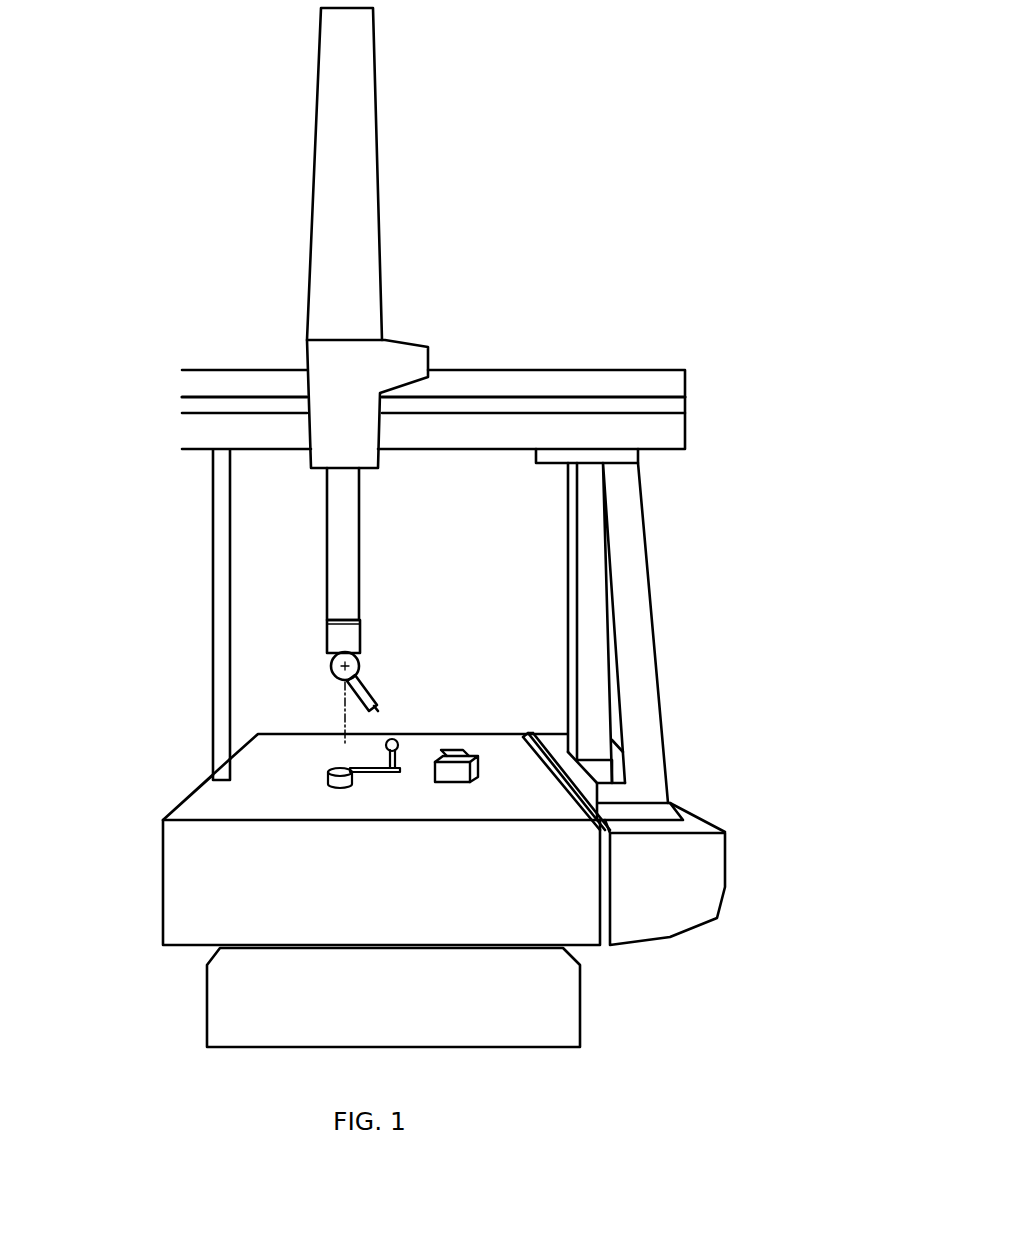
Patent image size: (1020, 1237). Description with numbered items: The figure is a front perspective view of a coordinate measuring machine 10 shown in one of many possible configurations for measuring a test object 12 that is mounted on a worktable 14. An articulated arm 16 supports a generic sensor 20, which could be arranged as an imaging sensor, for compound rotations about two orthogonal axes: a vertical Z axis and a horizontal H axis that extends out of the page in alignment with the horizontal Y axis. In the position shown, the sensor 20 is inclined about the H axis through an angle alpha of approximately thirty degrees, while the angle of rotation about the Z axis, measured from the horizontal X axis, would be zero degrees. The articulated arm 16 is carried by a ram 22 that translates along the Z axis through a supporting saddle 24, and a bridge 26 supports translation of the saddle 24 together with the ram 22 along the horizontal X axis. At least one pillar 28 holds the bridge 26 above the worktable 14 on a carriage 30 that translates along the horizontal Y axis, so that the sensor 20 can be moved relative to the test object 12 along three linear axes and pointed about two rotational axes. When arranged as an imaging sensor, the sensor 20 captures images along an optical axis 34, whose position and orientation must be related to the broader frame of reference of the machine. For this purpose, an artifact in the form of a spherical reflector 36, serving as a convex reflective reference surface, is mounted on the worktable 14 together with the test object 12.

The coordinate measuring machine 10 is at (176, 216).
The test object 12 is at (457, 755).
The worktable 14 is at (217, 808).
The articulated arm 16 is at (340, 640).
The sensor 20 is at (368, 697).
The ram 22 is at (327, 560).
The saddle 24 is at (413, 368).
The bridge 26 is at (685, 429).
The pillar 28 is at (648, 538).
The carriage 30 is at (560, 797).
The optical axis 34 is at (386, 720).
The spherical reflector 36 is at (386, 745).